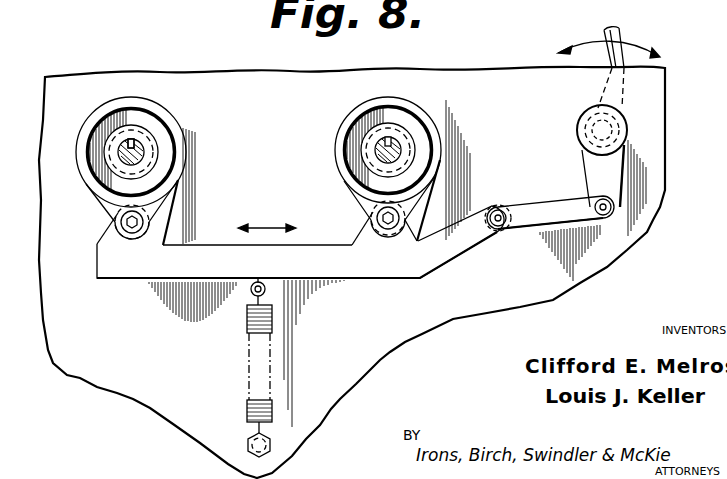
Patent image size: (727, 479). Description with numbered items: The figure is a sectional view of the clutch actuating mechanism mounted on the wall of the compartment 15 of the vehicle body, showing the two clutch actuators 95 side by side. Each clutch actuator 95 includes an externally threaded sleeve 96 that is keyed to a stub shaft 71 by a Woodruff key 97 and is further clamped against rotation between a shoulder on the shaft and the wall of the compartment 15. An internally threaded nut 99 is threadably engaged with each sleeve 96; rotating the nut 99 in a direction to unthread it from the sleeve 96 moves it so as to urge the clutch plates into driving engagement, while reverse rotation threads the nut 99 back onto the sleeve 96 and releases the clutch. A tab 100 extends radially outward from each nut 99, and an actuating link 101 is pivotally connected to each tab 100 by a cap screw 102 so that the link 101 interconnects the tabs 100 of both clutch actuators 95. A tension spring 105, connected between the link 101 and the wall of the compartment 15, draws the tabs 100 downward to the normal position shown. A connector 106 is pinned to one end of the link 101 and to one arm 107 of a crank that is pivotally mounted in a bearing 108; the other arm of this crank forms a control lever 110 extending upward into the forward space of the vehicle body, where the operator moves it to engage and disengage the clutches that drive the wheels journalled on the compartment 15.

The compartment 15 is at (494, 85).
The stub shaft 71 is at (119, 148).
The clutch actuator 95 is at (147, 103).
The externally threaded sleeve 96 is at (108, 152).
The Woodruff key 97 is at (131, 139).
The internally threaded nut 99 is at (174, 114).
The tab 100 is at (100, 203).
The actuating link 101 is at (212, 242).
The cap screw 102 is at (120, 222).
The tension spring 105 is at (247, 312).
The connector 106 is at (538, 205).
The crank arm 107 is at (614, 178).
The bearing 108 is at (628, 128).
The control lever 110 is at (615, 28).